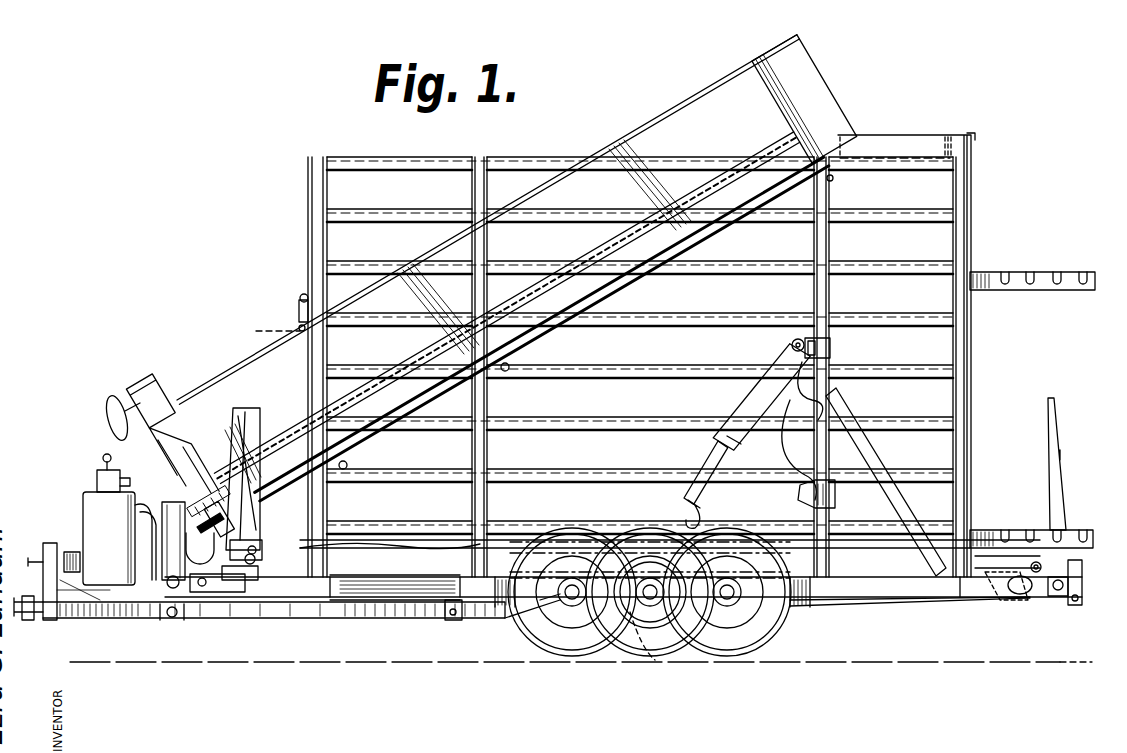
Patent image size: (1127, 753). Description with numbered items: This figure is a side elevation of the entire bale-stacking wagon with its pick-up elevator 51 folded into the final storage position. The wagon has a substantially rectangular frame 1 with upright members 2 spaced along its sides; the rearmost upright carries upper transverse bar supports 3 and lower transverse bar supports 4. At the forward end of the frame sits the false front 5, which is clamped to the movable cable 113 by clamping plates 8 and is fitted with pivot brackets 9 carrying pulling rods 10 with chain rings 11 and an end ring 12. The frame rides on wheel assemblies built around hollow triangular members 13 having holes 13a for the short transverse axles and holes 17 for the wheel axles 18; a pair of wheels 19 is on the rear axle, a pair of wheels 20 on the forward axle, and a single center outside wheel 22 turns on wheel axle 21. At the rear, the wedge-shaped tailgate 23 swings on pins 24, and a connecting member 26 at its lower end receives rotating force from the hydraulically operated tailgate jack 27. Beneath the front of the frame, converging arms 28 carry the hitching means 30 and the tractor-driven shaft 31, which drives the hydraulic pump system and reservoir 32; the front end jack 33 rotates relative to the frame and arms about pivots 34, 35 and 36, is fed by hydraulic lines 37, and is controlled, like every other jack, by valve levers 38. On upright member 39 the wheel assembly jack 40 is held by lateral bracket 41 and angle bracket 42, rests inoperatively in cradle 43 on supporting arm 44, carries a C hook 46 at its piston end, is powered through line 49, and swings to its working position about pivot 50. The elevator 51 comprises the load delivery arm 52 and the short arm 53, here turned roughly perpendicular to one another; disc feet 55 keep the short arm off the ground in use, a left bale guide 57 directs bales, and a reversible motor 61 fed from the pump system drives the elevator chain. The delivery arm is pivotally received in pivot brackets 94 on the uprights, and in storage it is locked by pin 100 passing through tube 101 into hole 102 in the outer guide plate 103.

The frame 1 is at (382, 586).
The upright members 2 is at (308, 185).
The upper transverse bar supports 3 is at (1040, 272).
The lower transverse bar supports 4 is at (1005, 532).
The false front 5 is at (259, 406).
The clamping plates 8 is at (205, 590).
The pivot brackets 9 is at (238, 582).
The pulling rods 10 is at (335, 545).
The chain rings 11 is at (403, 543).
The end ring 12 is at (1042, 568).
The triangular members 13 is at (700, 620).
The holes 13a is at (636, 618).
The holes 17 is at (562, 598).
The wheel axles 18 is at (568, 598).
The wheels 19 is at (760, 640).
The wheels 20 is at (590, 640).
The wheel axle 21 is at (655, 600).
The center outside wheel 22 is at (628, 535).
The tailgate 23 is at (1055, 410).
The pins 24 is at (1058, 592).
The connecting member 26 is at (1084, 582).
The tailgate jack 27 is at (995, 600).
The converging arms 28 is at (318, 620).
The hitching means 30 is at (33, 622).
The shaft 31 is at (33, 560).
The hydraulic pump system and reservoir 32 is at (86, 496).
The front end jack 33 is at (160, 535).
The pivot 34 is at (172, 618).
The pivot 35 is at (452, 620).
The pivot 36 is at (168, 586).
The hydraulic lines 37 is at (146, 508).
The valve levers 38 is at (96, 470).
The upright member 39 is at (830, 293).
The wheel assembly jack 40 is at (762, 410).
The lateral bracket 41 is at (830, 348).
The angle bracket 42 is at (832, 498).
The cradle 43 is at (738, 455).
The supporting arm 44 is at (760, 482).
The C hook 46 is at (690, 512).
The line 49 is at (812, 395).
The pivot 50 is at (792, 345).
The elevator 51 is at (697, 96).
The load delivery arm 52 is at (818, 52).
The short arm 53 is at (147, 381).
The disc feet 55 is at (108, 404).
The left bale guide 57 is at (218, 530).
The reversible motor 61 is at (262, 545).
The pivot bracket 94 is at (343, 468).
The pin 100 is at (302, 294).
The tube 101 is at (299, 308).
The hole 102 is at (268, 332).
The outer guide plate 103 is at (622, 138).
The cable 113 is at (435, 565).